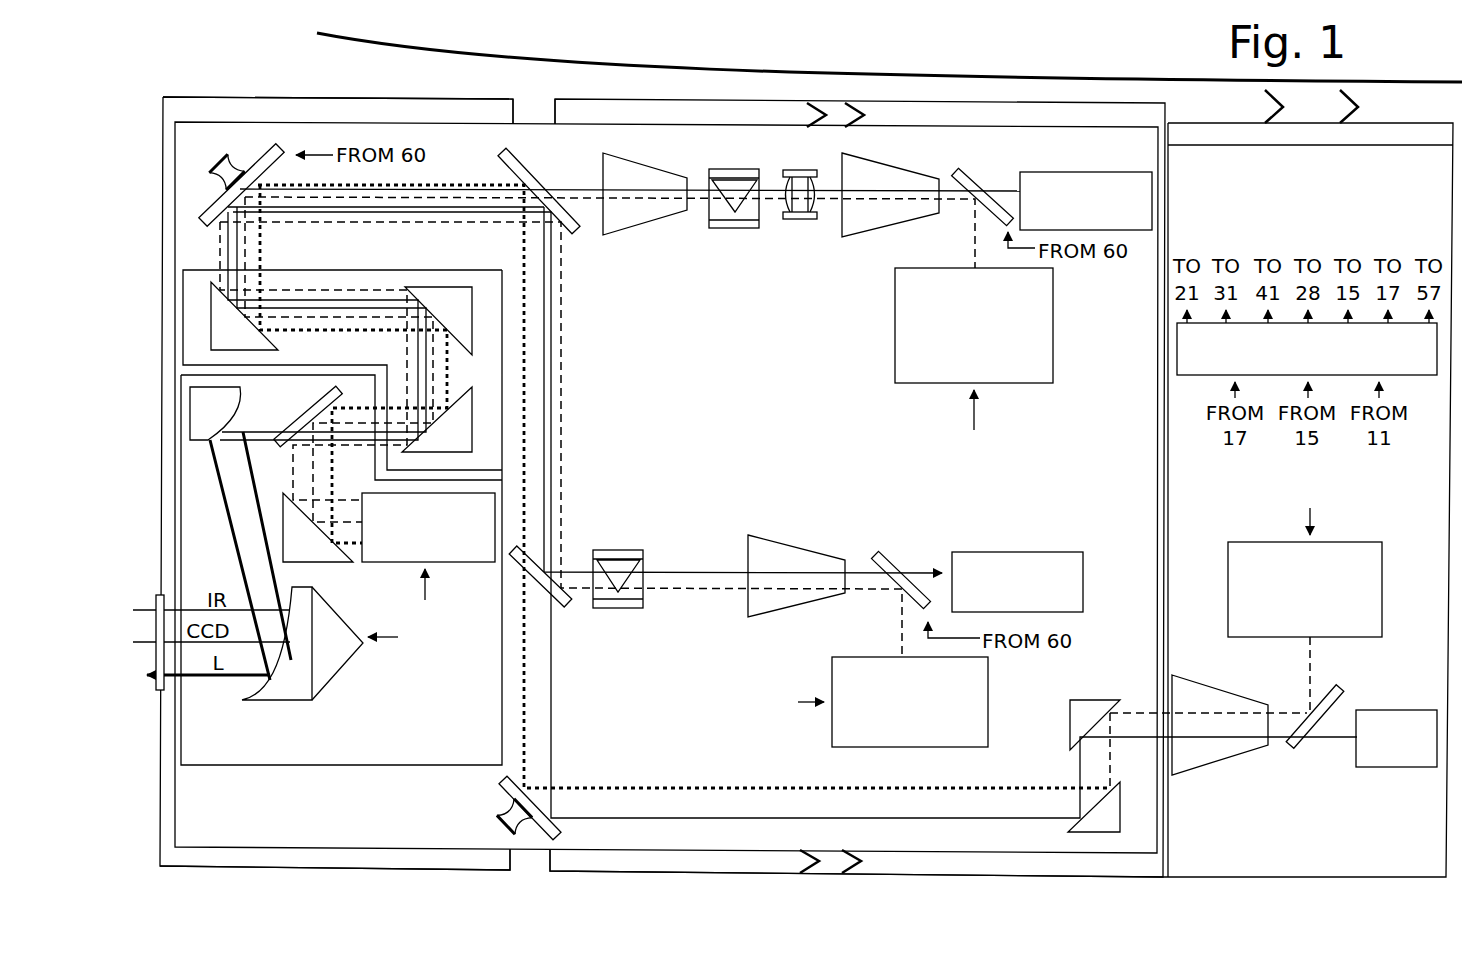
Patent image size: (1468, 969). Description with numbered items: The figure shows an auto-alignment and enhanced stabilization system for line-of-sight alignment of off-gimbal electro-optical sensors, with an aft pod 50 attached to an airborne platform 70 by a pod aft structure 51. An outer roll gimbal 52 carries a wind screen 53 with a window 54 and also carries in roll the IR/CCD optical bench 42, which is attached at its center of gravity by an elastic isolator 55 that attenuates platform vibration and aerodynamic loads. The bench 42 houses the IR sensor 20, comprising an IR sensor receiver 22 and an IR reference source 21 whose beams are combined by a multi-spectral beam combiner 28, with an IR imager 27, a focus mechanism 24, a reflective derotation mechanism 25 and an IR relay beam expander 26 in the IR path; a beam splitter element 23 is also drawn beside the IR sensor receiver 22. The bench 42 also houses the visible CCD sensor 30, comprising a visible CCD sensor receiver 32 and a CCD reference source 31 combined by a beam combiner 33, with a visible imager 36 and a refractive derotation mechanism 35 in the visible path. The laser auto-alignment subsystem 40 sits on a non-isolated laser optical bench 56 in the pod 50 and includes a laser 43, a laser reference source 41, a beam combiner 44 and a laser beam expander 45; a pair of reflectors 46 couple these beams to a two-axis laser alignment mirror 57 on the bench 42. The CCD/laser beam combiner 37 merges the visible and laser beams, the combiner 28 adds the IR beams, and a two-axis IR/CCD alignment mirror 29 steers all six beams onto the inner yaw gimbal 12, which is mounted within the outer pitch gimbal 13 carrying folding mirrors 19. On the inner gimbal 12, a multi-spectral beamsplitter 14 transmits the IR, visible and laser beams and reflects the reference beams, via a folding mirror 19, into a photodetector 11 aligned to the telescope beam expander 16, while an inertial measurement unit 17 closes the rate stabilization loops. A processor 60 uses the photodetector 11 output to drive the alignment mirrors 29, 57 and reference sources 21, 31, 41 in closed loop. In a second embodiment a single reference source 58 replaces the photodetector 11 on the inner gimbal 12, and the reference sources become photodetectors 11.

The photodetector 11 is at (880, 527).
The inner yaw gimbal 12 is at (323, 767).
The outer pitch gimbal 13 is at (347, 270).
The multi-spectral beamsplitter 14 is at (310, 403).
The telescope beam expander 16 is at (197, 442).
The inertial measurement unit 17 is at (343, 667).
The folding mirror 19 is at (278, 347).
The IR sensor 20 is at (628, 260).
The IR reference source 21 is at (1015, 383).
The IR sensor receiver 22 is at (1085, 172).
The beam splitter 23 is at (960, 168).
The focus mechanism 24 is at (802, 170).
The reflective derotation mechanism 25 is at (743, 169).
The IR relay beam expander 26 is at (657, 167).
The IR imager 27 is at (905, 168).
The multi-spectral beam combiner 28 is at (520, 170).
The two-axis IR/CCD alignment mirror 29 is at (257, 158).
The visible CCD sensor 30 is at (272, 76).
The CCD reference source 31 is at (962, 748).
The visible CCD sensor receiver 32 is at (1050, 552).
The beam combiner 33 is at (877, 552).
The refractive derotation mechanism 35 is at (626, 550).
The visible imager 36 is at (810, 548).
The CCD/laser beam combiner 37 is at (562, 607).
The laser auto-alignment subsystem 40 is at (1220, 816).
The laser reference source 41 is at (1370, 542).
The IR/CCD optical bench 42 is at (826, 482).
The laser 43 is at (1403, 710).
The beam combiner 44 is at (1337, 690).
The laser beam expander 45 is at (1232, 692).
The reflector 46 is at (1095, 700).
The aft pod 50 is at (1305, 181).
The pod aft structure 51 is at (1427, 123).
The outer roll gimbal 52 is at (555, 101).
The wind screen 53 is at (356, 97).
The window 54 is at (165, 683).
The elastic isolator 55 is at (866, 865).
The laser optical bench 56 is at (1324, 807).
The two-axis laser alignment mirror 57 is at (500, 784).
The single reference source 58 is at (457, 563).
The processor 60 is at (1190, 375).
The airborne platform 70 is at (428, 57).